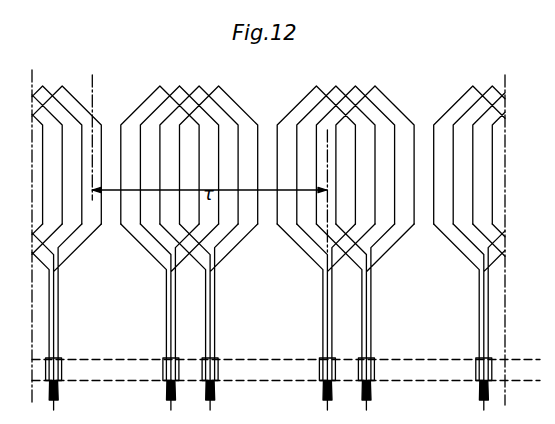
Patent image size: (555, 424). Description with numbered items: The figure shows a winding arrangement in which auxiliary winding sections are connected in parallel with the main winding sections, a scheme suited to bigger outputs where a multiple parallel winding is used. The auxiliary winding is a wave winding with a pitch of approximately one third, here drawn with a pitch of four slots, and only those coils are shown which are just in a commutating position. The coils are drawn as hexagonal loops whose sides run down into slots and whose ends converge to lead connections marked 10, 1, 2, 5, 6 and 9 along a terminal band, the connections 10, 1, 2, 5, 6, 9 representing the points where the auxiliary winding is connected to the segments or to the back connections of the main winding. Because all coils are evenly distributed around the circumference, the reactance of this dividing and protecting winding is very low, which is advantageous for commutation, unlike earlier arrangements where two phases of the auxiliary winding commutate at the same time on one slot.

The winding terminal lead 10 is at (64, 388).
The winding terminal lead 1 is at (181, 388).
The winding terminal lead 2 is at (220, 388).
The winding terminal lead 5 is at (338, 388).
The winding terminal lead 6 is at (376, 388).
The winding terminal lead 9 is at (494, 388).